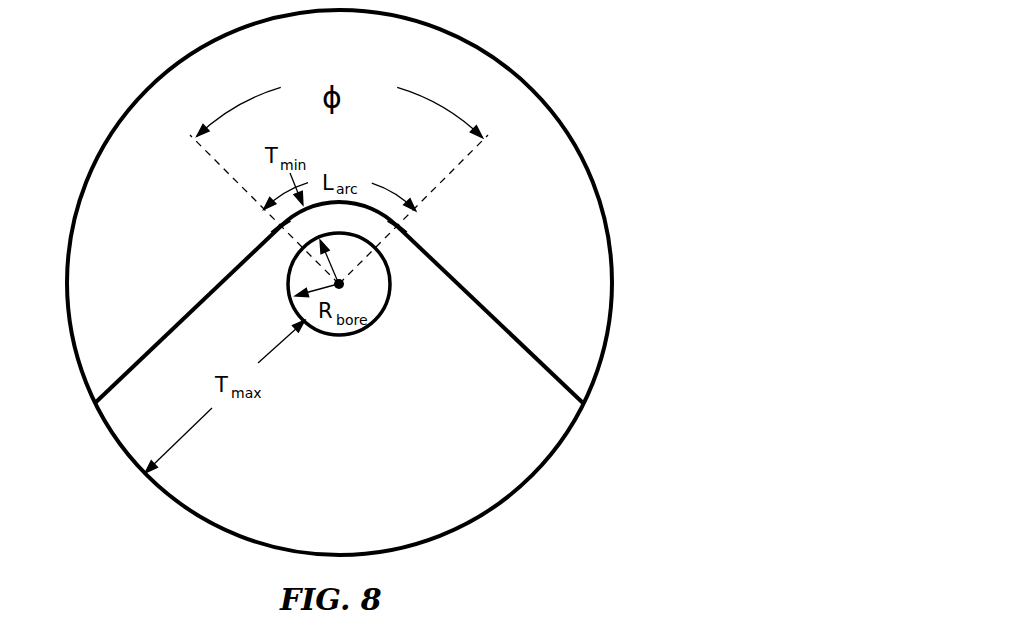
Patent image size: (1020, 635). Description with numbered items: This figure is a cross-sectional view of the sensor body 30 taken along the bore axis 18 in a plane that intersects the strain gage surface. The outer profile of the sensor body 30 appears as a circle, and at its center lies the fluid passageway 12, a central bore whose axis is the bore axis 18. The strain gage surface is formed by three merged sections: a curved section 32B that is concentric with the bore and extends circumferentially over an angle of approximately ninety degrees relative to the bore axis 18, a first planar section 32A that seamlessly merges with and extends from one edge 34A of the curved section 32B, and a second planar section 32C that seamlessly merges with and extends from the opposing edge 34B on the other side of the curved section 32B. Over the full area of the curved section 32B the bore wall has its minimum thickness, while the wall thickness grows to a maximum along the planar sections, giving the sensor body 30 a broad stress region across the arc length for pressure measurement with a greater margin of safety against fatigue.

The sensor body 30 is at (641, 106).
The first planar section 32A is at (184, 306).
The curved section 32B is at (363, 200).
The second planar section 32C is at (489, 306).
The edge of curved section 34A is at (266, 225).
The opposing edge of curved section 34B is at (413, 225).
The bore axis 18 is at (345, 278).
The fluid passageway 12 is at (372, 298).